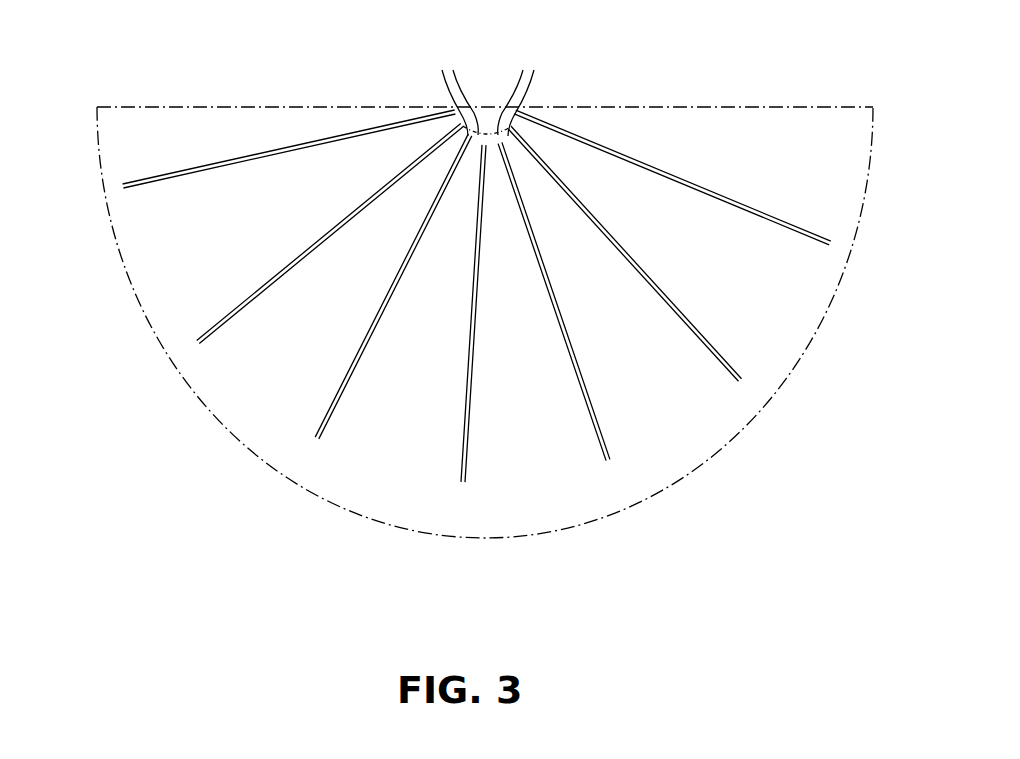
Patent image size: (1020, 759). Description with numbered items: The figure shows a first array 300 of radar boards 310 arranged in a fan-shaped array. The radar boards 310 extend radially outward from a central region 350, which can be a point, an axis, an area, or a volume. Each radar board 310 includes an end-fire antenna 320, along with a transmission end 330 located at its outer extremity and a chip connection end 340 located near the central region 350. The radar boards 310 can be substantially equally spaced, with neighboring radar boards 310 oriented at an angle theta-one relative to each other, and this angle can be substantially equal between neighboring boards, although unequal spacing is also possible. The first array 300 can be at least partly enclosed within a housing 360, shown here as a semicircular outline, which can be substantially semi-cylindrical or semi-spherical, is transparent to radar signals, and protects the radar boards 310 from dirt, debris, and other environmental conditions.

The first array 300 is at (144, 60).
The radar board 310 is at (212, 170).
The end-fire antenna 320 is at (127, 200).
The transmission end 330 is at (117, 188).
The chip connection end 340 is at (483, 91).
The central region 350 is at (483, 91).
The housing 360 is at (876, 143).